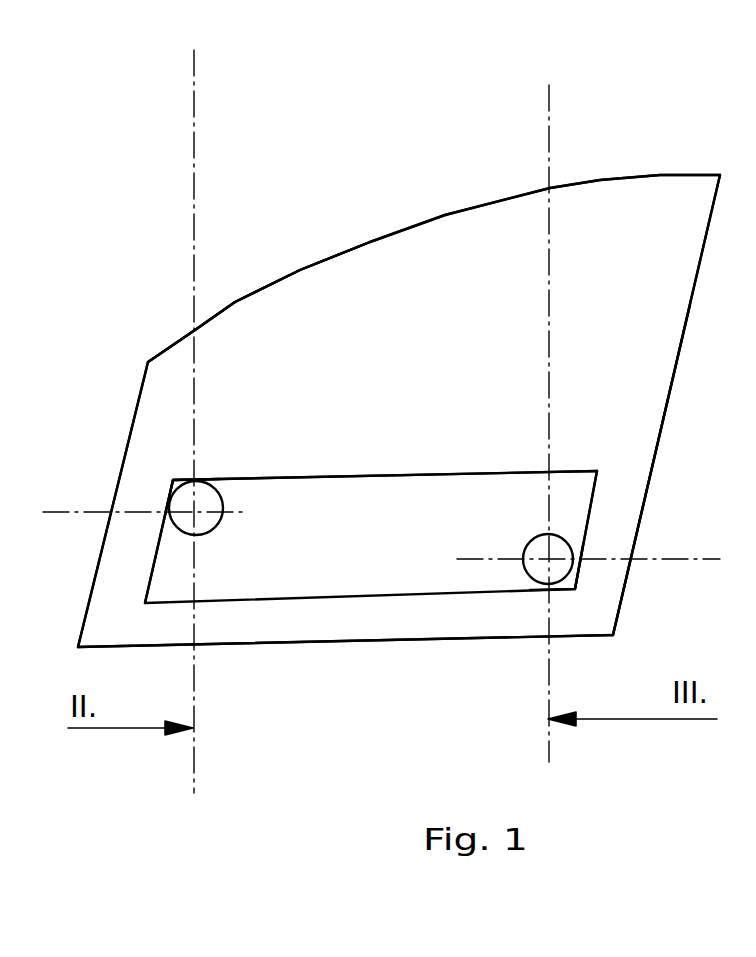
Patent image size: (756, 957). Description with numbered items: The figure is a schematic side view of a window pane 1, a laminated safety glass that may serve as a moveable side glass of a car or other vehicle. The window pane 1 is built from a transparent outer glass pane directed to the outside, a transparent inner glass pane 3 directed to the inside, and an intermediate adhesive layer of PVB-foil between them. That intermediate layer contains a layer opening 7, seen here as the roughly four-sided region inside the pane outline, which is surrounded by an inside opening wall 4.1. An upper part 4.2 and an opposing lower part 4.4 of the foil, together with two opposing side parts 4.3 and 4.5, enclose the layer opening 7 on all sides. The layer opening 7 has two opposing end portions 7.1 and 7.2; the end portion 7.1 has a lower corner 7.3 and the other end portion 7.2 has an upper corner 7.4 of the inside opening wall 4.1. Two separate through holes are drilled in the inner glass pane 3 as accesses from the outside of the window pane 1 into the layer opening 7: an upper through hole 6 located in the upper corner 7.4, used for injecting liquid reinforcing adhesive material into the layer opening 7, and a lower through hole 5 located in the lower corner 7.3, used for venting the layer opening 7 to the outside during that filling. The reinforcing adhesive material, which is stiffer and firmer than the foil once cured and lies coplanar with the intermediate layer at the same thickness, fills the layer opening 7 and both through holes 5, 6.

The window pane 1 is at (372, 270).
The inner glass pane 3 is at (623, 503).
The inside opening wall 4.1 is at (304, 468).
The upper part 4.2 is at (450, 270).
The side part 4.3 is at (650, 407).
The lower part 4.4 is at (392, 613).
The side part 4.5 is at (133, 493).
The lower through hole 5 is at (528, 568).
The upper through hole 6 is at (222, 535).
The layer opening 7 is at (346, 570).
The end portion 7.1 is at (593, 512).
The end portion 7.2 is at (147, 583).
The lower corner 7.3 is at (574, 589).
The upper corner 7.4 is at (170, 479).